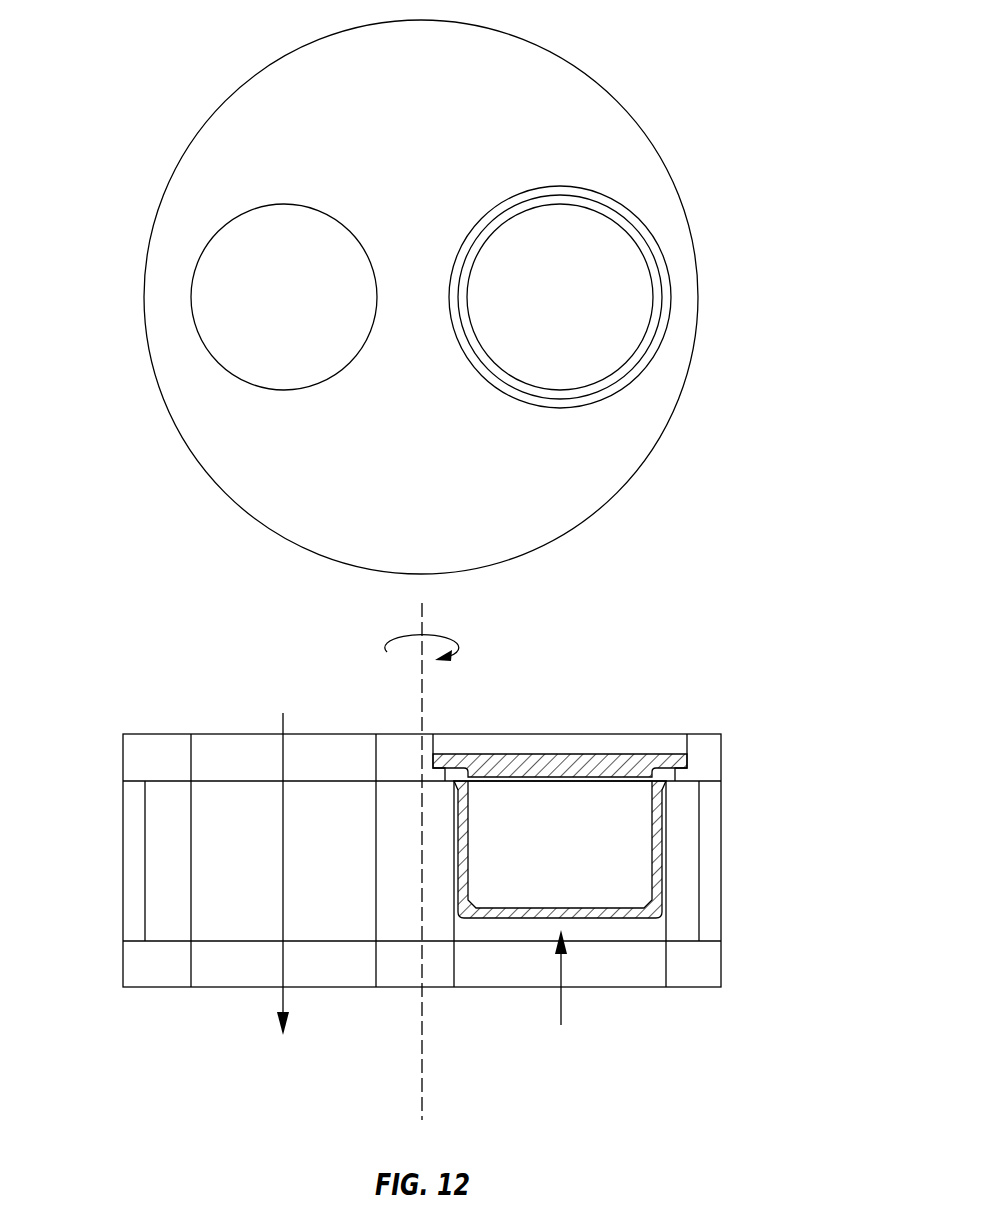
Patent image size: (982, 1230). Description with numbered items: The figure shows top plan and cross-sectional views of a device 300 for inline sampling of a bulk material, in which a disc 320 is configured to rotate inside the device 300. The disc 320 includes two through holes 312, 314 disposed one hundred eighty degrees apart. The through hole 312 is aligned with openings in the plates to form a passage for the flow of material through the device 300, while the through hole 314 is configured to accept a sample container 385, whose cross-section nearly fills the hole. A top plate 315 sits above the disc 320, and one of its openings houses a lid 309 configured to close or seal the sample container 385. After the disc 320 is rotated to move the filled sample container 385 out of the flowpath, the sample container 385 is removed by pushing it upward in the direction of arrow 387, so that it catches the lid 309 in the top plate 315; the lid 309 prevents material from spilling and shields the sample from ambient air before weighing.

The device 300 is at (187, 49).
The lid 309 is at (680, 760).
The through hole 312 is at (247, 300).
The through hole 314 is at (627, 270).
The top plate 315 is at (722, 760).
The disc 320 is at (578, 60).
The sample container 385 is at (658, 893).
The arrow 387 is at (562, 1010).